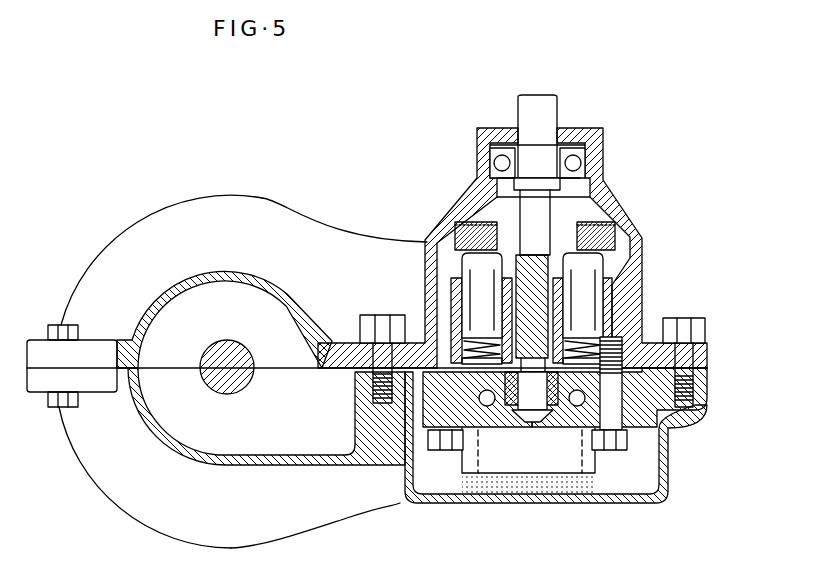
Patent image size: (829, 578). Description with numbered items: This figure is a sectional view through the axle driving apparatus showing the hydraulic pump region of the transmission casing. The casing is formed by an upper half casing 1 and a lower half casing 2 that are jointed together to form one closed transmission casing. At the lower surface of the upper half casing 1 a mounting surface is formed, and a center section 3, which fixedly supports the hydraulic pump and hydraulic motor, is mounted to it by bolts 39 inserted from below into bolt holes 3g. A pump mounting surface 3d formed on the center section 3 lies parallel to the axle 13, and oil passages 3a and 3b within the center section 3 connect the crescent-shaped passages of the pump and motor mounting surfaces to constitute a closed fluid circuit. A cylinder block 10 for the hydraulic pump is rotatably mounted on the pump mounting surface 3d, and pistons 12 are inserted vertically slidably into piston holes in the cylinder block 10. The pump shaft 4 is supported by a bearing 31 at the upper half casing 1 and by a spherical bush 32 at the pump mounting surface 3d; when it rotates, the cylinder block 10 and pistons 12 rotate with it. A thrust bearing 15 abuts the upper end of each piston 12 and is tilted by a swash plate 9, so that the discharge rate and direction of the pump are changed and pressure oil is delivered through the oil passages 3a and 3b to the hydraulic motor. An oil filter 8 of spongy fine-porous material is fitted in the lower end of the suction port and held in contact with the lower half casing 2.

The upper half casing 1 is at (642, 286).
The lower half casing 2 is at (707, 396).
The center section 3 is at (390, 440).
The oil passage 3a is at (463, 430).
The oil passage 3b is at (582, 404).
The pump mounting surface 3d is at (408, 338).
The bolt hole 3g is at (622, 437).
The pump shaft 4 is at (557, 112).
The oil filter 8 is at (507, 486).
The swash plate 9 is at (598, 220).
The cylinder block 10 is at (445, 290).
The piston 12 is at (491, 306).
The axle 13 is at (238, 394).
The thrust bearing 15 is at (605, 233).
The bearing 31 is at (581, 160).
The spherical bush 32 is at (486, 406).
The bolt 39 is at (437, 452).